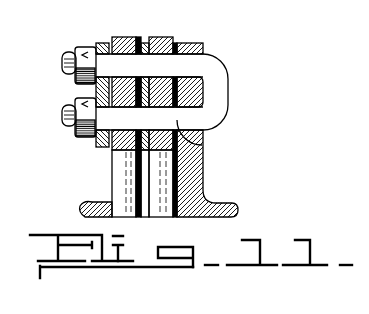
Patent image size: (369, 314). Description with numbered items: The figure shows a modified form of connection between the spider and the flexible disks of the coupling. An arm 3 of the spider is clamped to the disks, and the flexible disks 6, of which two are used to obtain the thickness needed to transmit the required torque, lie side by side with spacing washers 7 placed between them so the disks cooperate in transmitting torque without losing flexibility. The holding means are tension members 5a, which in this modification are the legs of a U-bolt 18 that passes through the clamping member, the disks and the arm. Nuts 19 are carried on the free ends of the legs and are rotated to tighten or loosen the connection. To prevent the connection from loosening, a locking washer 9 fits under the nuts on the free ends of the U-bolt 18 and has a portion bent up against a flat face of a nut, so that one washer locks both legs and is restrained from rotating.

The arm 3 is at (181, 63).
The tension member 5a is at (205, 47).
The flexible disk 6 is at (125, 40).
The spacing washer 7 is at (146, 43).
The washer 9 is at (94, 62).
The U-bolt 18 is at (222, 81).
The nut 19 is at (94, 49).